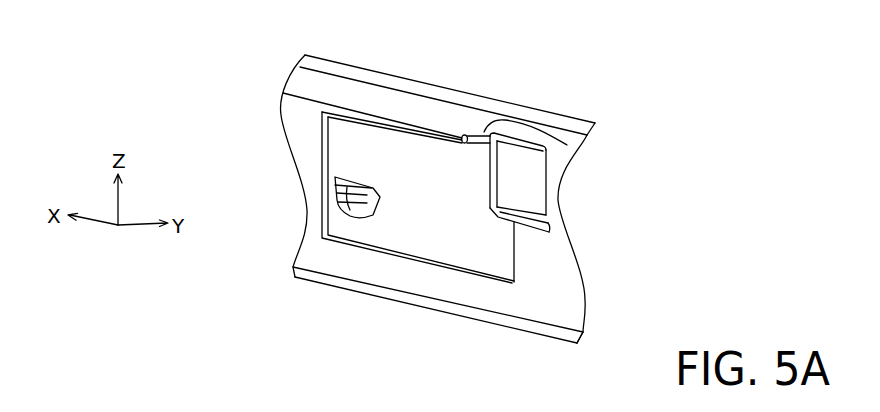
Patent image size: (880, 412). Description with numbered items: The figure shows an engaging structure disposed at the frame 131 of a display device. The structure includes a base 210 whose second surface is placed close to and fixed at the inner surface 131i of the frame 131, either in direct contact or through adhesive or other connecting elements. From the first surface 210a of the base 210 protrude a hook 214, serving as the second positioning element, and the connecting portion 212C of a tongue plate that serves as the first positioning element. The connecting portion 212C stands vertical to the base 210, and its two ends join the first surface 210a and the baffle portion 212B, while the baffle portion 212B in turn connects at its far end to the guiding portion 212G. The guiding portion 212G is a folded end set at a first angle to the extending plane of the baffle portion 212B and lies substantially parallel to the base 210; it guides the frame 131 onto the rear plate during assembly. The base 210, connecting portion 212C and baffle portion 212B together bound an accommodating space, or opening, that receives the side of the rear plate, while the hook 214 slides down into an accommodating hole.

The frame 131 is at (335, 43).
The inner surface of the frame 131i is at (293, 125).
The base 210 is at (418, 197).
The first surface of the base 210a is at (420, 237).
The baffle portion 212B is at (533, 189).
The connecting portion 212C is at (553, 140).
The guiding portion 212G is at (548, 224).
The hook 214 is at (340, 198).